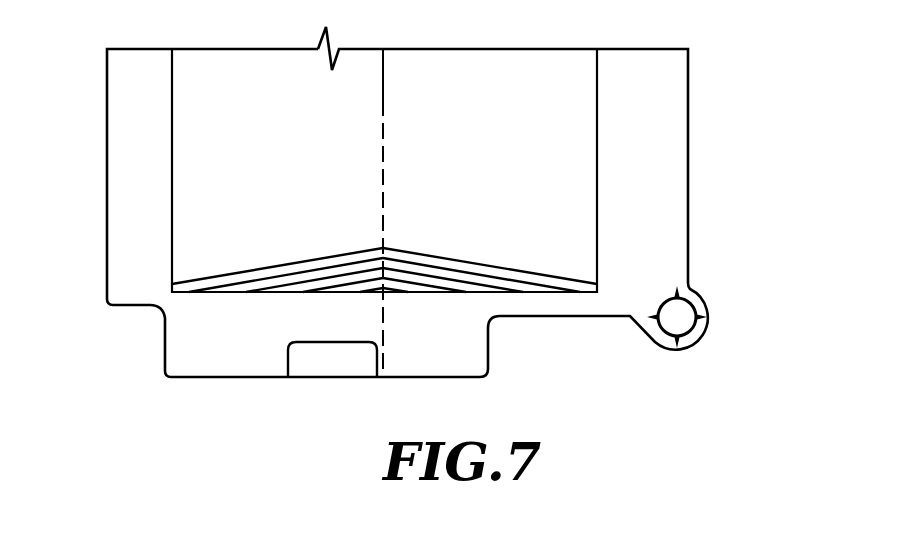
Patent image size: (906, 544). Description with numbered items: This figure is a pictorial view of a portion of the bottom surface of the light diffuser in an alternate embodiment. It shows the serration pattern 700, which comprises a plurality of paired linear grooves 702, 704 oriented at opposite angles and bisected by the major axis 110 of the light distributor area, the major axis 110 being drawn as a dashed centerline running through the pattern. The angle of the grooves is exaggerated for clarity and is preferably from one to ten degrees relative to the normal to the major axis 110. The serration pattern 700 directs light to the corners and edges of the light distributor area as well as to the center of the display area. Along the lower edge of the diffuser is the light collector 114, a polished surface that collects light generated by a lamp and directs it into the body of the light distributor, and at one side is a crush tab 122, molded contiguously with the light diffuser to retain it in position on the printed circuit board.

The major axis 110 is at (383, 82).
The serration pattern 700 is at (384, 170).
The paired linear groove 702 is at (552, 272).
The paired linear groove 704 is at (231, 269).
The light collector 114 is at (344, 380).
The crush tabs 122 is at (700, 337).